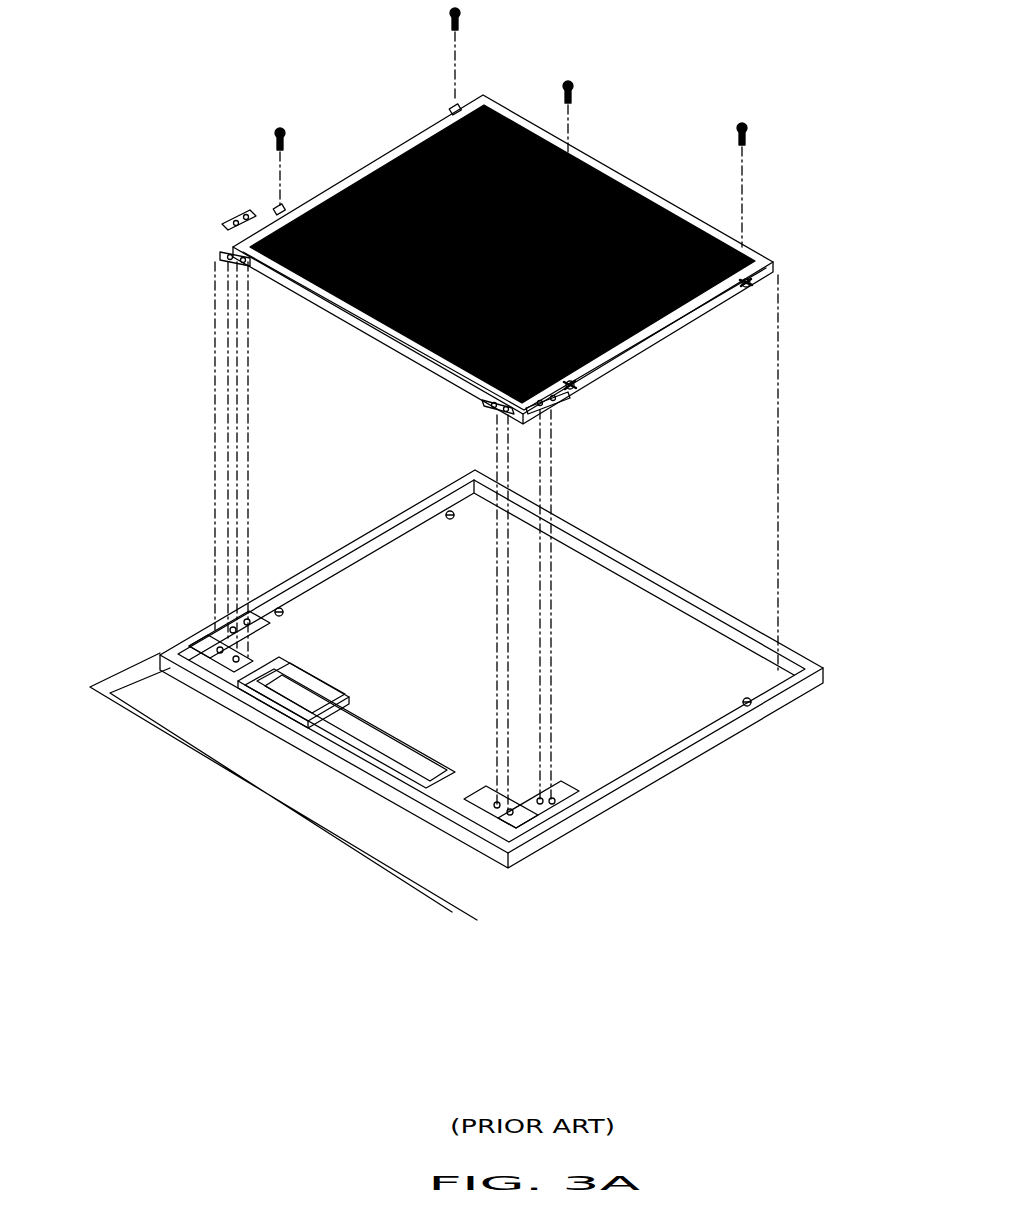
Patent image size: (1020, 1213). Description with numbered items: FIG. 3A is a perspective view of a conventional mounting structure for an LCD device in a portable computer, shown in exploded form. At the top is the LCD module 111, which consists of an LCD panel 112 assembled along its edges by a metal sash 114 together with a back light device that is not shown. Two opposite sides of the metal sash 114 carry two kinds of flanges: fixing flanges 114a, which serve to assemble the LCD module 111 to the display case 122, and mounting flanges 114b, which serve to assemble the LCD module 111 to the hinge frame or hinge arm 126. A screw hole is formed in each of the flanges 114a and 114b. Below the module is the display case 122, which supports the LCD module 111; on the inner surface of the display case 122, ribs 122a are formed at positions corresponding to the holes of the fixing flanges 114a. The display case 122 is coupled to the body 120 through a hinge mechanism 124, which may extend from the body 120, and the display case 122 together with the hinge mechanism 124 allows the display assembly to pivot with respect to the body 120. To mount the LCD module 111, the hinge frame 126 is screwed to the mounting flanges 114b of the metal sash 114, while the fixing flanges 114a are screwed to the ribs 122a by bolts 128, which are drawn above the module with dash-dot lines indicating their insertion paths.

The LCD module 111 is at (770, 240).
The LCD panel 112 is at (622, 176).
The metal sash 114 is at (787, 280).
The fixing flanges 114a is at (455, 112).
The mounting flanges 114b is at (222, 262).
The body 120 is at (477, 890).
The display case 122 is at (822, 680).
The ribs 122a is at (279, 607).
The hinge mechanism 124 is at (240, 708).
The hinge frame 126 is at (180, 673).
The bolts 128 is at (448, 16).